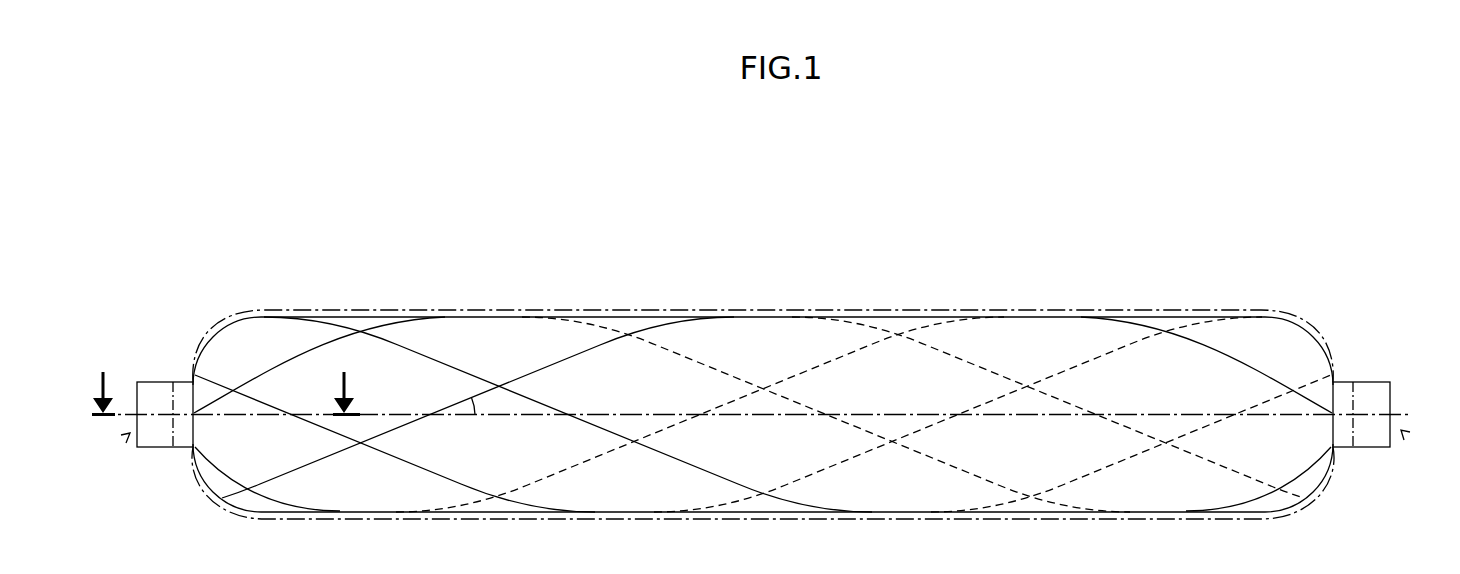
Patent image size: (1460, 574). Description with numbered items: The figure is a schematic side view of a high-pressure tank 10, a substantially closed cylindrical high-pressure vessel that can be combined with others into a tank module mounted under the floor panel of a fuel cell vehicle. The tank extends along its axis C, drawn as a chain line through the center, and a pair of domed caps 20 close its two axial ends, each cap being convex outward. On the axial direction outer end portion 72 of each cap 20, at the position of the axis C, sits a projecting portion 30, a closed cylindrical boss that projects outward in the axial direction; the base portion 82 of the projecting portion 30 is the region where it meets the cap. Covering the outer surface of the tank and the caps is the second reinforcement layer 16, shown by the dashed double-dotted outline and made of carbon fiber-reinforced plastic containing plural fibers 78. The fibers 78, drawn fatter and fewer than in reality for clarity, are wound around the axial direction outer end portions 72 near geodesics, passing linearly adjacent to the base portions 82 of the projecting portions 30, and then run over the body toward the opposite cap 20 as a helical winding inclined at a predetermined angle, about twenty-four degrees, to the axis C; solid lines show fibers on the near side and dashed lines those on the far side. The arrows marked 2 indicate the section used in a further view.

The high-pressure tank 10 is at (817, 243).
The second reinforcement layer 16 is at (1105, 310).
The cap 20 is at (129, 434).
The projecting portion 30 is at (155, 388).
The axial direction outer end portion 72 is at (217, 343).
The fiber 78 is at (212, 467).
The base portion 82 is at (183, 388).
The section line of FIG. 2 is at (97, 367).
The axis C is at (622, 411).